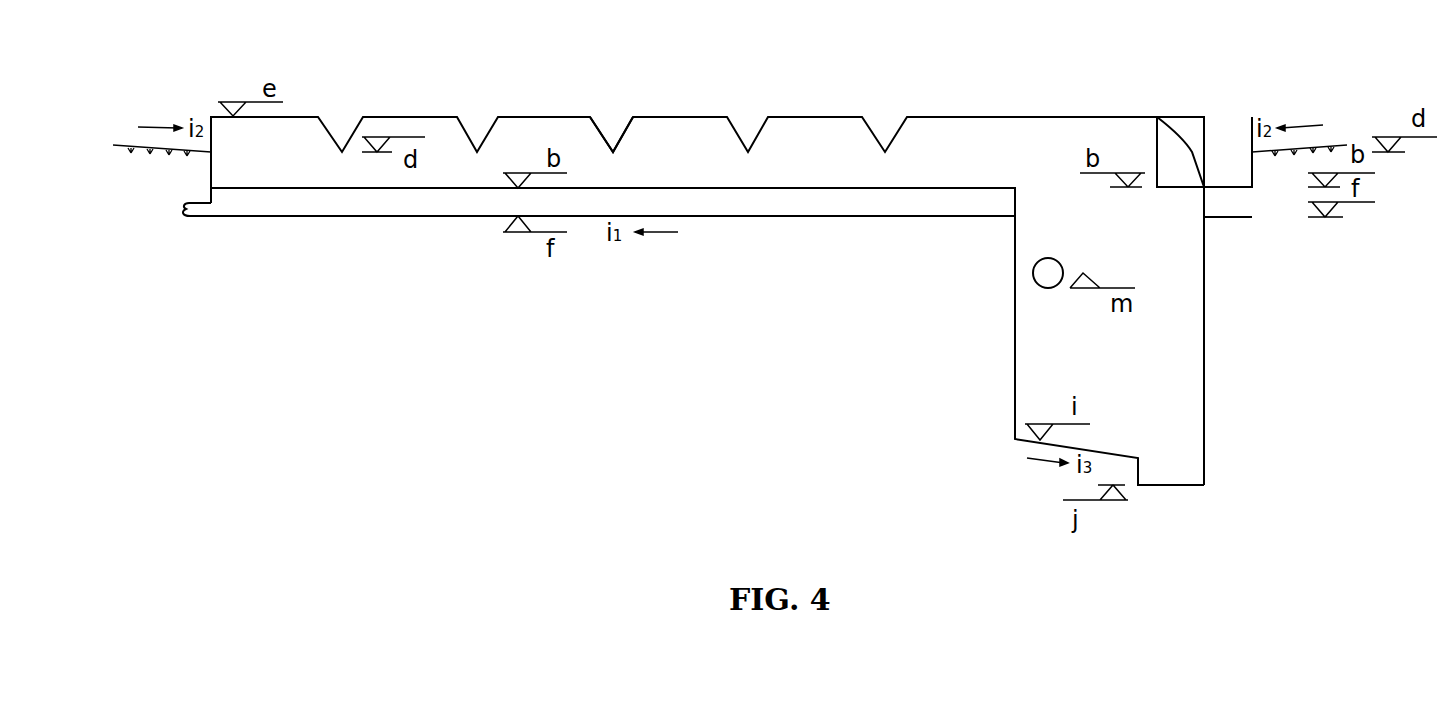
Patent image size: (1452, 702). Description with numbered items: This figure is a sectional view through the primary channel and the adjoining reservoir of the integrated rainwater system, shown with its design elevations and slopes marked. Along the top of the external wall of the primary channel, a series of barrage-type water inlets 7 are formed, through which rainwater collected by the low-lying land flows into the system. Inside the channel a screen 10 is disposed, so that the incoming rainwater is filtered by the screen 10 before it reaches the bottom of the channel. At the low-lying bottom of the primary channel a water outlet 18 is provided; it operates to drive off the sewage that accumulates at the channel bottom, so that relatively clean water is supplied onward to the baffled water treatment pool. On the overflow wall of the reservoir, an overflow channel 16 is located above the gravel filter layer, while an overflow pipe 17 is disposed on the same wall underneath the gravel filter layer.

The barrage-type water inlets 7 is at (628, 118).
The screen 10 is at (900, 187).
The overflow channel 16 is at (1187, 135).
The overflow pipe 17 is at (1050, 288).
The water outlet 18 is at (195, 212).